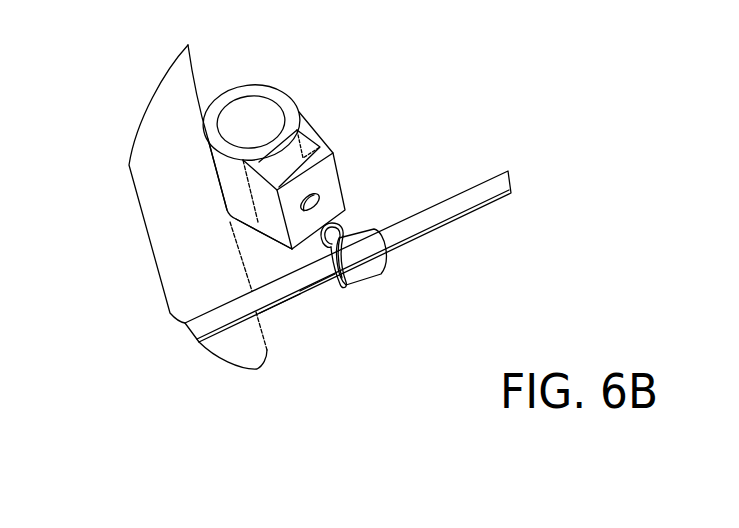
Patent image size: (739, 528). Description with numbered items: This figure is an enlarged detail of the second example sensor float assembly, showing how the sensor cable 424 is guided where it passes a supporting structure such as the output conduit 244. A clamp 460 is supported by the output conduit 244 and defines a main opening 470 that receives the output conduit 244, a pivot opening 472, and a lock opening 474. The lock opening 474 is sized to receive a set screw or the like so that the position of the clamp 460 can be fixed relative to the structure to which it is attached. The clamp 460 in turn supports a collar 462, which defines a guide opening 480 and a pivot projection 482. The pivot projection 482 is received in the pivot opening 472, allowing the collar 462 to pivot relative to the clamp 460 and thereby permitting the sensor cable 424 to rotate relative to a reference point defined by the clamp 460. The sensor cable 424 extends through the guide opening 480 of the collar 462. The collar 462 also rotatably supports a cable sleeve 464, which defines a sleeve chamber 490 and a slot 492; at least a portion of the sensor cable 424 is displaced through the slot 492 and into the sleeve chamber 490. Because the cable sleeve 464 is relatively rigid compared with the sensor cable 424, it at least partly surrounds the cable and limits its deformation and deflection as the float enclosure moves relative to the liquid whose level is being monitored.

The output conduit 244 is at (148, 201).
The sensor cable 424 is at (459, 206).
The clamp 460 is at (305, 160).
The collar 462 is at (384, 267).
The cable sleeve 464 is at (289, 273).
The main opening 470 is at (261, 107).
The pivot opening 472 is at (319, 198).
The lock opening 474 is at (232, 131).
The guide opening 480 is at (375, 260).
The pivot projection 482 is at (341, 228).
The sleeve chamber 490 is at (298, 291).
The slot 492 is at (323, 284).